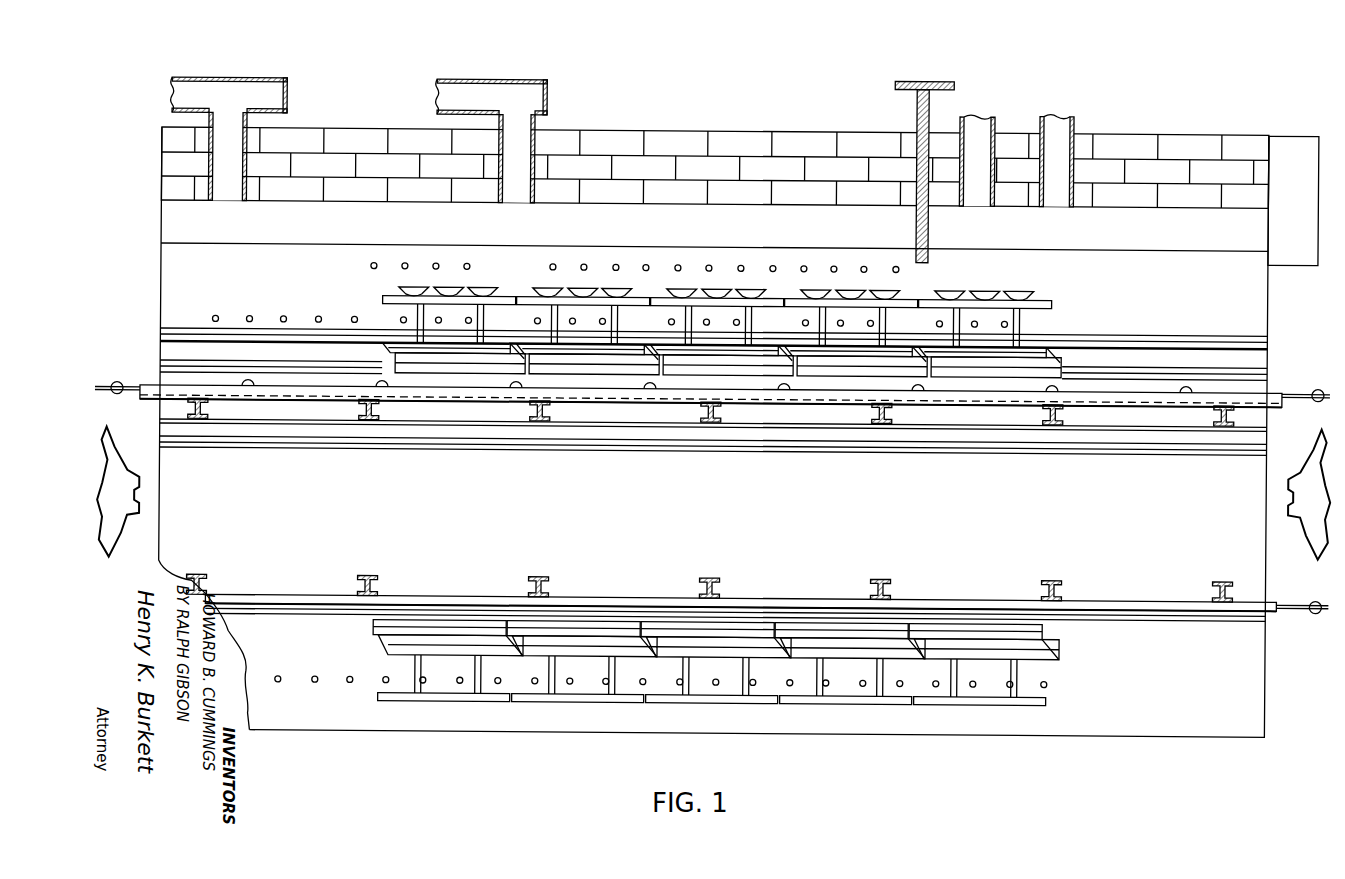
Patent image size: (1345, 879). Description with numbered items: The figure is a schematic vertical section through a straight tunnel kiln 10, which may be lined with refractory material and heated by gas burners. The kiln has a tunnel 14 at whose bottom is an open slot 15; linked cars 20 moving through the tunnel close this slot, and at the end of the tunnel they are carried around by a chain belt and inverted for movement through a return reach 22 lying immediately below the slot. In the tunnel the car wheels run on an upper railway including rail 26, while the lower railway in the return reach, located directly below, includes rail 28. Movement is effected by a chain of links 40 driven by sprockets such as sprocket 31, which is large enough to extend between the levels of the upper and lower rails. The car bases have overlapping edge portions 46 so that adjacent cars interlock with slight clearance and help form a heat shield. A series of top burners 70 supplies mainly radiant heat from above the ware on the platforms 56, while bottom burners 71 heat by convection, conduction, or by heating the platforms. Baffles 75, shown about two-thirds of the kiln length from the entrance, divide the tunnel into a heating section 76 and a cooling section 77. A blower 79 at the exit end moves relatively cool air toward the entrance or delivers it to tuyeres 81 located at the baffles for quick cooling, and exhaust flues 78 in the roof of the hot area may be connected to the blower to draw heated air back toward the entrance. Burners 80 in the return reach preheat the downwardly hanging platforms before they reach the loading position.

The tunnel kiln 10 is at (668, 109).
The tunnel 14 is at (714, 234).
The open slot 15 is at (316, 319).
The cars 20 is at (400, 340).
The return reach 22 is at (734, 670).
The rail 26 is at (748, 380).
The rail 28 is at (1122, 608).
The sprocket 31 is at (118, 438).
The links 40 is at (128, 385).
The overlapping edge portions 46 is at (793, 340).
The platforms 56 is at (1043, 300).
The top burners 70 is at (518, 267).
The bottom burners 71 is at (275, 311).
The baffles 75 is at (928, 221).
The heating section 76 is at (182, 225).
The cooling section 77 is at (1250, 291).
The exhaust flues 78 is at (263, 88).
The blower 79 is at (1292, 200).
The burners 80 is at (372, 689).
The tuyeres 81 is at (973, 112).